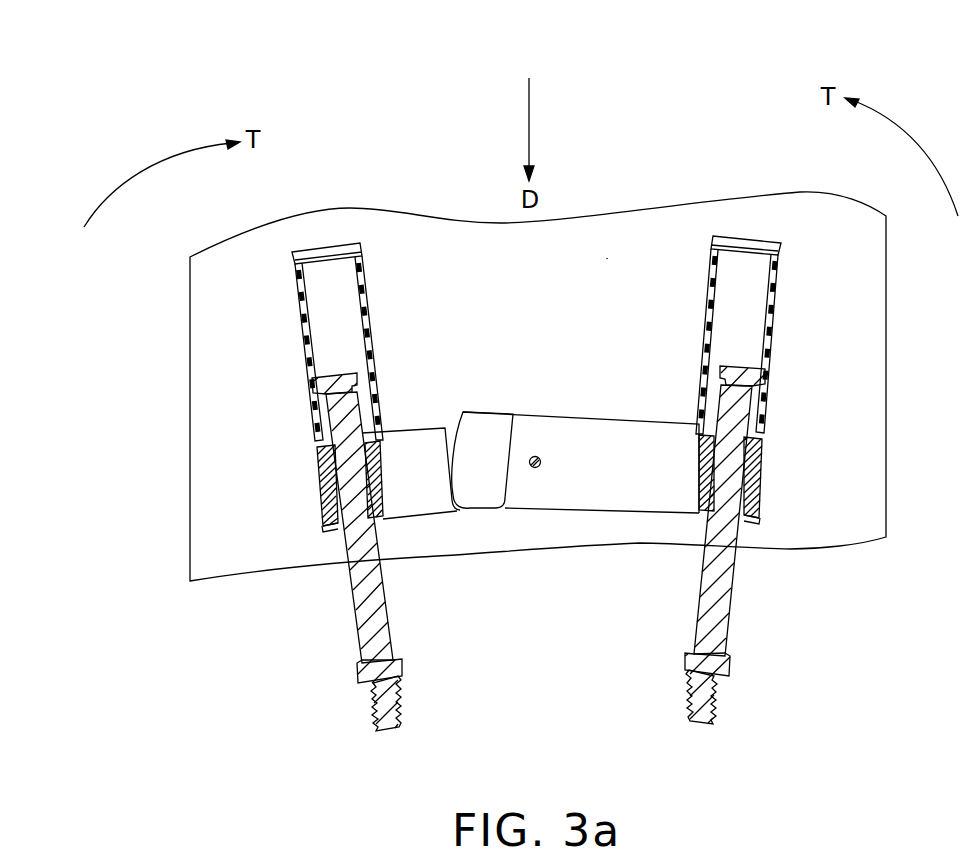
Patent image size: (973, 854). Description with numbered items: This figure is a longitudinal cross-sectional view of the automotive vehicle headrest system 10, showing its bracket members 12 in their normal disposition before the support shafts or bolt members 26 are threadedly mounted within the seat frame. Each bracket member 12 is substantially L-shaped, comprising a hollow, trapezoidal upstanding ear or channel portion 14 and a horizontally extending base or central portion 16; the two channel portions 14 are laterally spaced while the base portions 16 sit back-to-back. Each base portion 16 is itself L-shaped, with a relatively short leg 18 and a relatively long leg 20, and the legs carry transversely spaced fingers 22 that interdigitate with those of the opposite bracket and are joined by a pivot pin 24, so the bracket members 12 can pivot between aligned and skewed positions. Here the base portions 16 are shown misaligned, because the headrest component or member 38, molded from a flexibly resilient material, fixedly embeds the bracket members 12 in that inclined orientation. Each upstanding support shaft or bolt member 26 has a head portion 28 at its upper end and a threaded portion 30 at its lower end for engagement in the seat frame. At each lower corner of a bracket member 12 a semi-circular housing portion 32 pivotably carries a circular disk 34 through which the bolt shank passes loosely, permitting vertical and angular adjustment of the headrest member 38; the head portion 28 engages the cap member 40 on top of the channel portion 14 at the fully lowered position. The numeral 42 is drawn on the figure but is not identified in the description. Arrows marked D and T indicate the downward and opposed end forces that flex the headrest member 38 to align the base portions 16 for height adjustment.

The automotive vehicle headrest system 10 is at (610, 256).
The bracket member 12 is at (316, 458).
The upstanding ear or channel portion 14 is at (298, 325).
The horizontally extending base or central portion 16 is at (641, 424).
The relatively short leg 18 is at (410, 445).
The relatively long leg 20 is at (608, 495).
The fingers 22 is at (480, 488).
The pivot pin 24 is at (539, 458).
The upstanding support shaft or bolt member 26 is at (357, 622).
The head portion 28 is at (330, 376).
The threaded portion 30 is at (397, 700).
The semi-circular housing portion 32 is at (322, 487).
The circular disk 34 is at (328, 512).
The headrest component or member 38 is at (511, 289).
The cap member 40 is at (345, 250).
The flange 42 is at (356, 675).